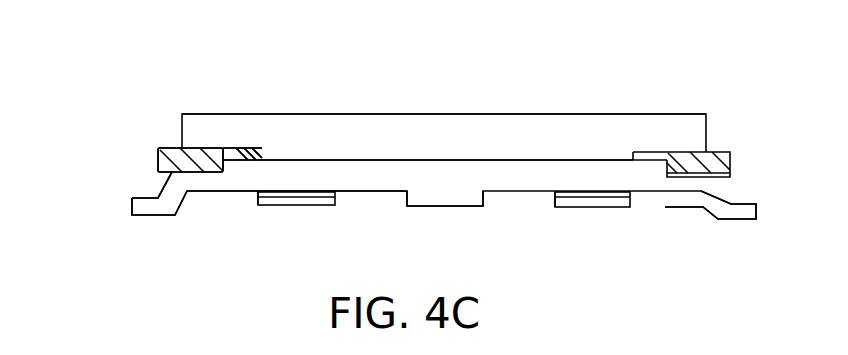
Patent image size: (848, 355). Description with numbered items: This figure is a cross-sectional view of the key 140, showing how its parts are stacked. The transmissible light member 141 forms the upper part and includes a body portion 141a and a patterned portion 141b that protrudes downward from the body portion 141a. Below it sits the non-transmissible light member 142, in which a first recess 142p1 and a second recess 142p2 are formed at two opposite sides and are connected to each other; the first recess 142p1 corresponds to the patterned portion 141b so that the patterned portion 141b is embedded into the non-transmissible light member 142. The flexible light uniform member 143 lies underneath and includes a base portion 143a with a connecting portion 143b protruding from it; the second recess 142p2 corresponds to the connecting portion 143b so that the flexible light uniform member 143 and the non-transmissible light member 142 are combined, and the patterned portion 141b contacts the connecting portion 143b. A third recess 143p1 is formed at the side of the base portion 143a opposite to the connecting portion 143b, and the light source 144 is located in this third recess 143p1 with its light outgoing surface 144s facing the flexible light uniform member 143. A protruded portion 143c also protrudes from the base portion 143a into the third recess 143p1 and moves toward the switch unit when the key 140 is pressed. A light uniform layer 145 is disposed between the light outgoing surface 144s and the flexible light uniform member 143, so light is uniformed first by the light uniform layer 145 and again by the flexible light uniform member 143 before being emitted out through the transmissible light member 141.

The key 140 is at (792, 51).
The transmissible light member 141 is at (160, 147).
The body portion 141a is at (453, 125).
The patterned portion 141b is at (378, 160).
The non-transmissible light member 142 is at (140, 165).
The first recess 142p1 is at (235, 155).
The second recess 142p2 is at (158, 126).
The flexible light uniform member 143 is at (114, 207).
The base portion 143a is at (203, 191).
The connecting portion 143b is at (292, 168).
The protruded portion 143c is at (437, 206).
The third recess 143p1 is at (685, 216).
The light source 144 is at (298, 205).
The light outgoing surface 144s is at (330, 181).
The light uniform layer 145 is at (258, 192).